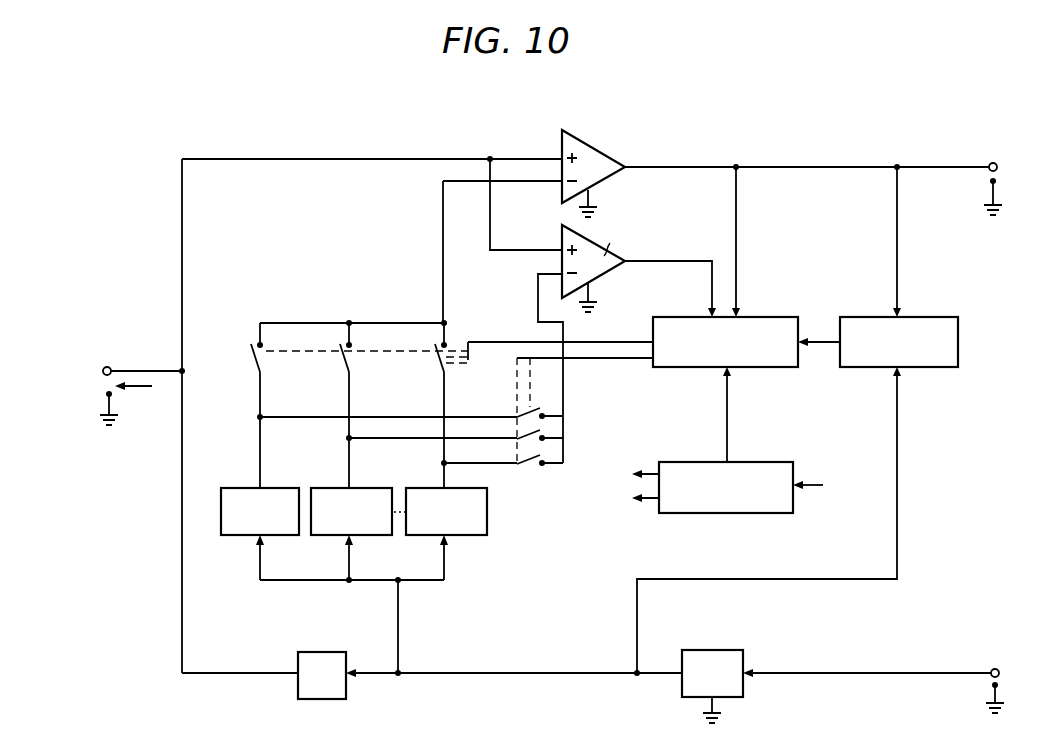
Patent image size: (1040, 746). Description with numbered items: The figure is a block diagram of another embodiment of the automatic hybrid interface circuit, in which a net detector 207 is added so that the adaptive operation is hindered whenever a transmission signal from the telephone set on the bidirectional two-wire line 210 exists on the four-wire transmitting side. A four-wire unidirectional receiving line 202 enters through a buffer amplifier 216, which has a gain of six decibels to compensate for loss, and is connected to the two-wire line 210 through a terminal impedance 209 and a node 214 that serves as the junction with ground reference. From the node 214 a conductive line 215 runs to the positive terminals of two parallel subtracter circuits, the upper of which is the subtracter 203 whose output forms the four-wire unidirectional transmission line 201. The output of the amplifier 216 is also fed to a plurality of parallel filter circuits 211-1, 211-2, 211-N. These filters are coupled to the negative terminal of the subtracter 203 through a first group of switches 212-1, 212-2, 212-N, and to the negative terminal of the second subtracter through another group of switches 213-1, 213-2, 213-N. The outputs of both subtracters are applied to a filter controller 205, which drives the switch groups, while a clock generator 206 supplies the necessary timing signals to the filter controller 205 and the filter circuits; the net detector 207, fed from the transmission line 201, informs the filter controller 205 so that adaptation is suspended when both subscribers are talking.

The four-wire unidirectional transmission line 201 is at (813, 213).
The four-wire unidirectional receiving line 202 is at (873, 667).
The subtracter 203 is at (538, 216).
The filter controller 205 is at (654, 320).
The clock generator 206 is at (753, 440).
The net detector 207 is at (796, 475).
The terminal impedance 209 is at (432, 661).
The bidirectional two-wire line 210 is at (101, 377).
The filter circuit 211-1 is at (269, 515).
The filter circuit 211-2 is at (360, 515).
The filter circuit 211-N is at (483, 534).
The switch 212-1 is at (231, 405).
The switch 212-2 is at (318, 405).
The switch 212-N is at (410, 405).
The switch 213-1 is at (410, 396).
The switch 213-2 is at (491, 425).
The switch 213-N is at (518, 476).
The node 214 is at (168, 416).
The conductive line 215 is at (372, 179).
The buffer amplifier 216 is at (740, 672).